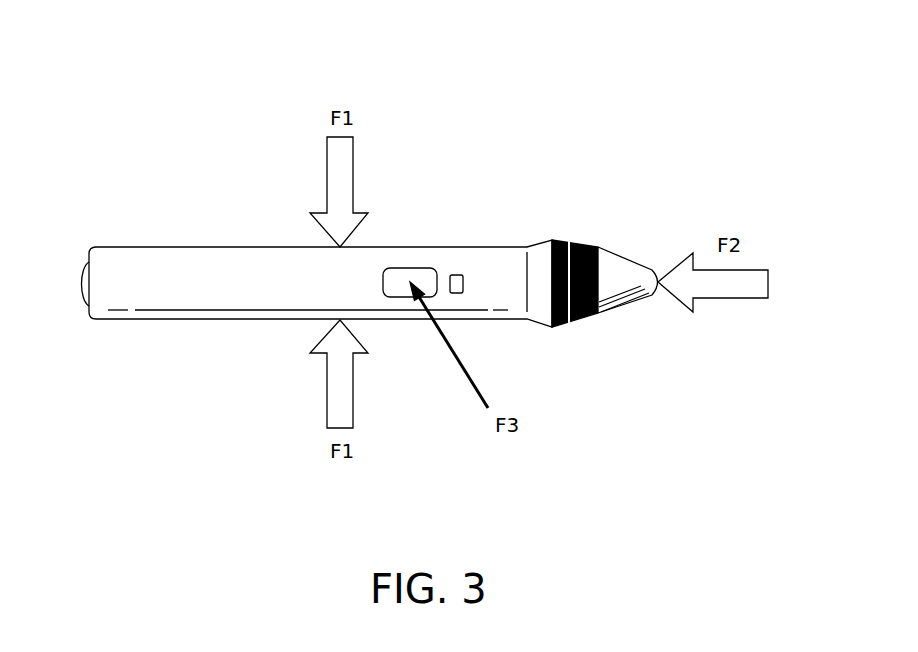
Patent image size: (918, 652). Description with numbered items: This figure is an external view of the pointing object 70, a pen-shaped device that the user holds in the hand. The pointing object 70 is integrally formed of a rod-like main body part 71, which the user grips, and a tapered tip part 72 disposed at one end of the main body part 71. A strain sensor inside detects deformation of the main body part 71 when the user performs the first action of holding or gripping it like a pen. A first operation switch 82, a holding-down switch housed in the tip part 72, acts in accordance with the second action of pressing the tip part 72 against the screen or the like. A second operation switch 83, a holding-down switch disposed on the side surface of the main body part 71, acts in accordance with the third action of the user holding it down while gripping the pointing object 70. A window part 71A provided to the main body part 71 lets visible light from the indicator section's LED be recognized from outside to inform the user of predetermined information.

The pointing object 70 is at (381, 215).
The main body part 71 is at (415, 245).
The window part 71A is at (458, 274).
The tip part 72 is at (638, 258).
The first operation switch 82 is at (625, 290).
The second operation switch 83 is at (397, 290).